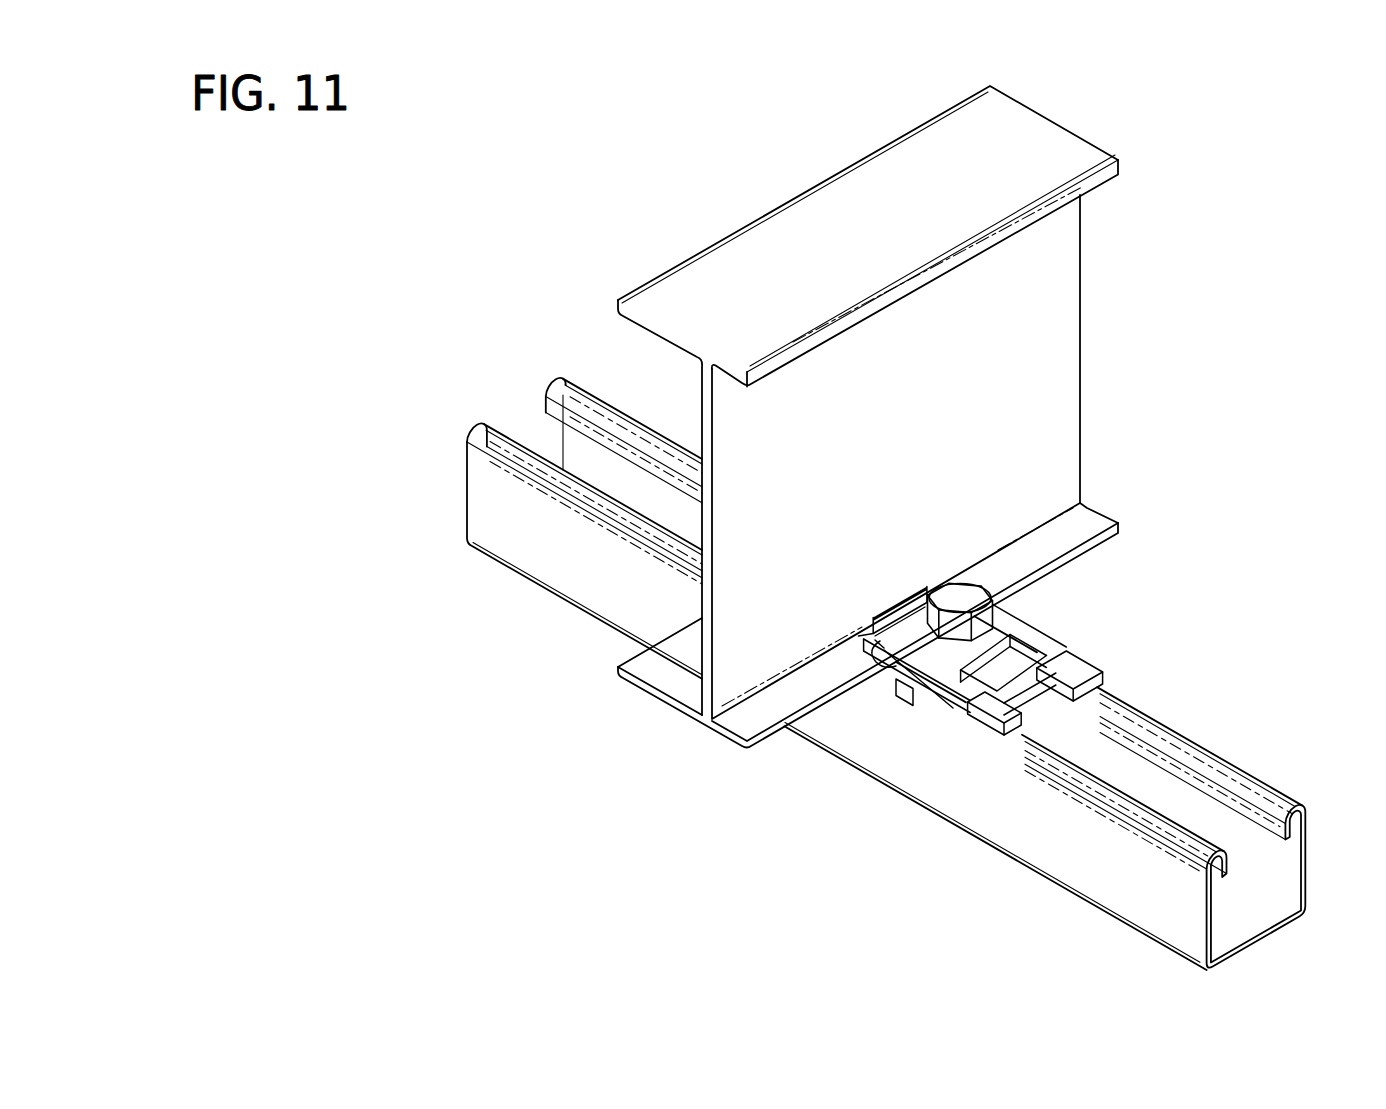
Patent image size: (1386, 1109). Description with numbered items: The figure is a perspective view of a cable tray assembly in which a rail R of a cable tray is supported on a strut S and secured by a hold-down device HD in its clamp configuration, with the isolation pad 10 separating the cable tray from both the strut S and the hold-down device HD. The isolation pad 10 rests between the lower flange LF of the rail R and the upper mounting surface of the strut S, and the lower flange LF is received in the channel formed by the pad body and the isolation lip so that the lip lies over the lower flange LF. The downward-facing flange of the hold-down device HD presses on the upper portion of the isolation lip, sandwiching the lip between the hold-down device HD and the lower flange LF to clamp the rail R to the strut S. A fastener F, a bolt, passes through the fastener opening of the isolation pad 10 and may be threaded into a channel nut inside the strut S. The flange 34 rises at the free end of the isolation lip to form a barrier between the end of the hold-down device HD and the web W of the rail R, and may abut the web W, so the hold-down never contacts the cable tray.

The rail R is at (913, 417).
The web W is at (1065, 371).
The lower flange LF is at (1090, 523).
The strut S is at (1233, 775).
The fastener F is at (972, 592).
The hold-down device HD is at (1016, 634).
The isolation pad 10 is at (890, 706).
The flange 34 is at (888, 602).